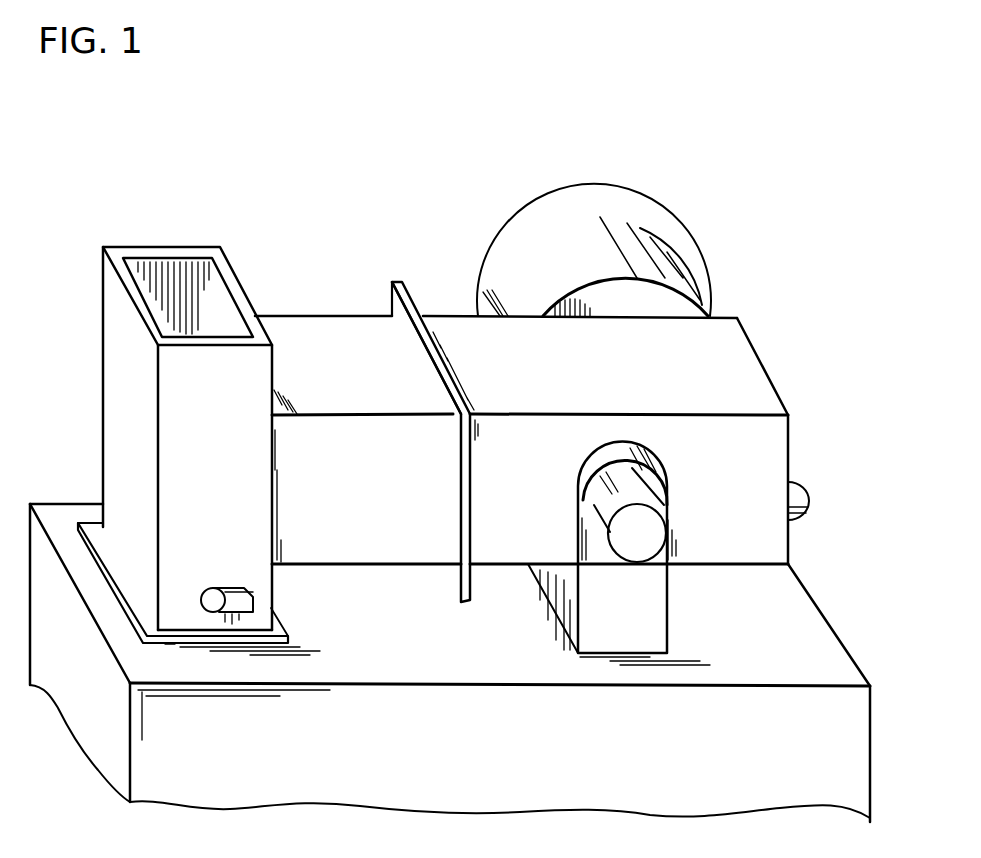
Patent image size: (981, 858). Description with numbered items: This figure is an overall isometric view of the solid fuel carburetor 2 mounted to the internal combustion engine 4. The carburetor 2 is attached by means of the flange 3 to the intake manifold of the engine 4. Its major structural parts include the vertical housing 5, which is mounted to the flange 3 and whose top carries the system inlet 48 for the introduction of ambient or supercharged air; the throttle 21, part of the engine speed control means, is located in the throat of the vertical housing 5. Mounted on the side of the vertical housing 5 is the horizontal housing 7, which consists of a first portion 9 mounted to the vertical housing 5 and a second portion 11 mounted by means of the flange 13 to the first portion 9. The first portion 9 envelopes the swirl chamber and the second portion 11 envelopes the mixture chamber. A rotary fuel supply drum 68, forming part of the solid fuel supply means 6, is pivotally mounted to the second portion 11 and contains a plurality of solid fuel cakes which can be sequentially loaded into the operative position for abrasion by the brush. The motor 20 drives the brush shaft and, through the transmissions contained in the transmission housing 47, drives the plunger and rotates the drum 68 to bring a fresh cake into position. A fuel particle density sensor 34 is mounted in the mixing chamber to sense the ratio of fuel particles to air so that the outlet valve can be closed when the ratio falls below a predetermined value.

The solid fuel carburetor 2 is at (157, 123).
The flange 3 is at (147, 632).
The internal combustion engine 4 is at (453, 763).
The vertical housing 5 is at (103, 323).
The solid fuel supply means 6 is at (721, 223).
The horizontal housing 7 is at (466, 175).
The first portion 9 is at (307, 327).
The second portion 11 is at (450, 323).
The flange 13 is at (397, 282).
The motor 20 is at (660, 533).
The throttle 21 is at (253, 607).
The fuel particle density sensor 34 is at (795, 483).
The transmission housing 47 is at (657, 622).
The system inlet 48 is at (187, 273).
The rotary fuel supply drum 68 is at (570, 225).